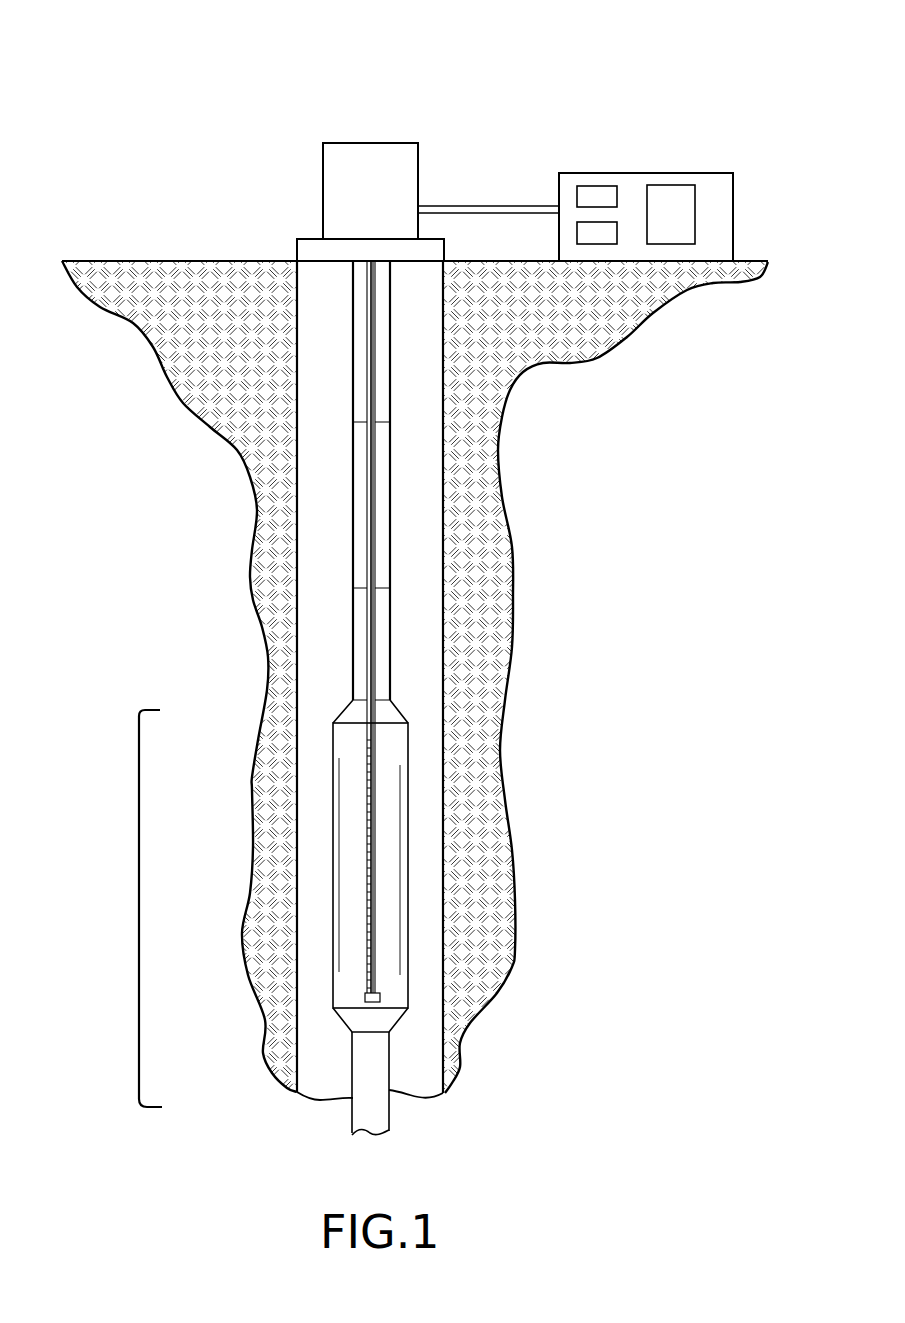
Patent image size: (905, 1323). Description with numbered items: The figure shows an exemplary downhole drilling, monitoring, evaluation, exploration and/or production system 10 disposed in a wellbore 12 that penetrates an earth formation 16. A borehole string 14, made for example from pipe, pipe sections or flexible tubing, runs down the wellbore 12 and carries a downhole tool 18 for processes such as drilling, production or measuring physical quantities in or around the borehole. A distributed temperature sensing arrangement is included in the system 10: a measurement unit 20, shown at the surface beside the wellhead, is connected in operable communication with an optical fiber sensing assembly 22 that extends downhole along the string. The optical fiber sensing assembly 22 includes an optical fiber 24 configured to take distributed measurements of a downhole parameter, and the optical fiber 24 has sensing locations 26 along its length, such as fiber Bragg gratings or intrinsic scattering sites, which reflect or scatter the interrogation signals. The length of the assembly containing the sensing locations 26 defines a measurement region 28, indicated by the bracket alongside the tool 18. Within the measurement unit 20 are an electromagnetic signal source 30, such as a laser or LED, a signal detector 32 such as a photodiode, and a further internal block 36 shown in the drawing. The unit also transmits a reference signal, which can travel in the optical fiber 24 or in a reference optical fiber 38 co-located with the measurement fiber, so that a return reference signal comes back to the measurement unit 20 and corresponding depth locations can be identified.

The downhole drilling, monitoring, evaluation, exploration and/or production system 10 is at (103, 100).
The wellbore 12 is at (427, 577).
The borehole string 14 is at (388, 498).
The earth formation 16 is at (213, 378).
The downhole tool 18 is at (408, 935).
The measurement unit 20 is at (703, 173).
The optical fiber sensing assembly 22 is at (345, 620).
The optical fiber 24 is at (360, 496).
The sensing locations 26 is at (370, 798).
The measurement region 28 is at (139, 910).
The electromagnetic signal source 30 is at (593, 192).
The signal detector 32 is at (587, 228).
The memory 36 is at (667, 190).
The reference optical fiber 38 is at (377, 658).